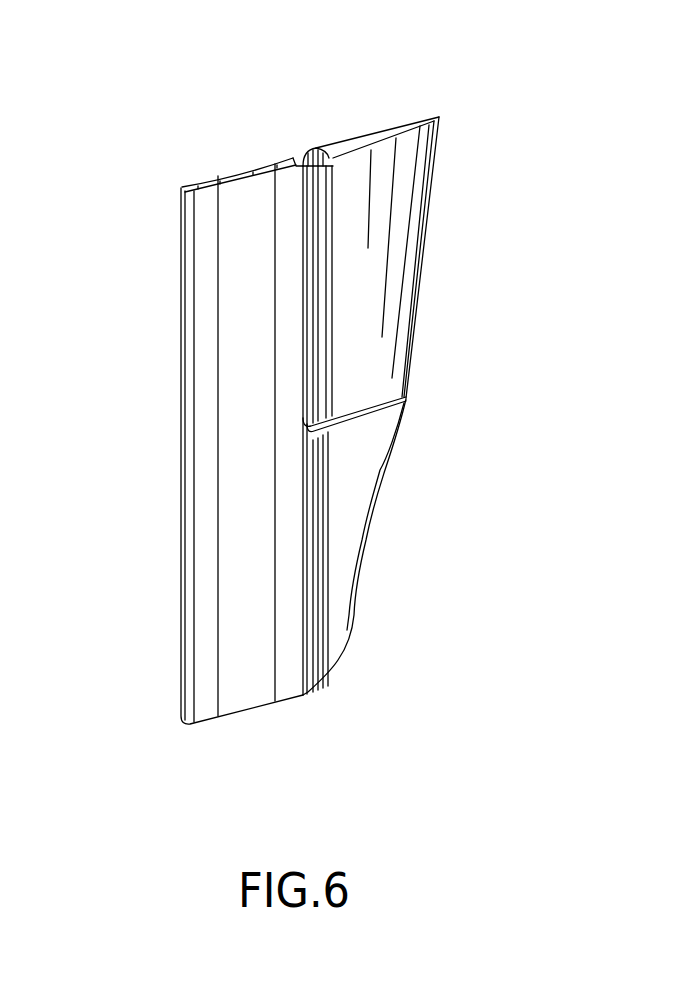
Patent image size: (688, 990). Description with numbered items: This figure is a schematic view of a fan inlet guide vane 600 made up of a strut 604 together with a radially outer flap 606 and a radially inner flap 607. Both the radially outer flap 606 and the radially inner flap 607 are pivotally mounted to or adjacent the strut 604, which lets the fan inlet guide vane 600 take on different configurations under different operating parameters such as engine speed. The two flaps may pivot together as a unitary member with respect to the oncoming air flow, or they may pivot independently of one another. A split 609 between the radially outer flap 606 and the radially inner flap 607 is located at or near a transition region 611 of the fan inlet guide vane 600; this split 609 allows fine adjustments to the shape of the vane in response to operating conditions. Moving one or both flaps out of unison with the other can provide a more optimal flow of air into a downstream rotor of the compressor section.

The fan inlet guide vane 600 is at (122, 98).
The strut 604 is at (202, 340).
The radially outer flap 606 is at (427, 207).
The radially inner flap 607 is at (372, 510).
The split 609 is at (428, 395).
The transition region 611 is at (454, 440).